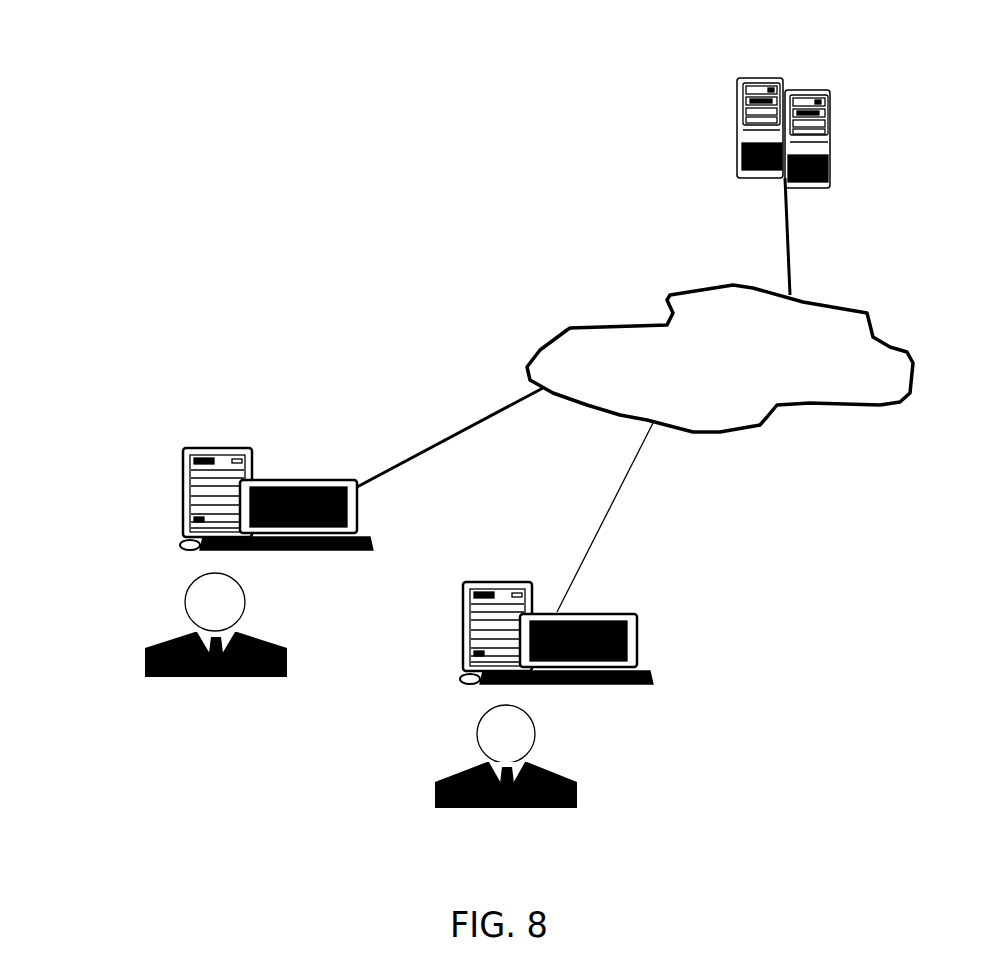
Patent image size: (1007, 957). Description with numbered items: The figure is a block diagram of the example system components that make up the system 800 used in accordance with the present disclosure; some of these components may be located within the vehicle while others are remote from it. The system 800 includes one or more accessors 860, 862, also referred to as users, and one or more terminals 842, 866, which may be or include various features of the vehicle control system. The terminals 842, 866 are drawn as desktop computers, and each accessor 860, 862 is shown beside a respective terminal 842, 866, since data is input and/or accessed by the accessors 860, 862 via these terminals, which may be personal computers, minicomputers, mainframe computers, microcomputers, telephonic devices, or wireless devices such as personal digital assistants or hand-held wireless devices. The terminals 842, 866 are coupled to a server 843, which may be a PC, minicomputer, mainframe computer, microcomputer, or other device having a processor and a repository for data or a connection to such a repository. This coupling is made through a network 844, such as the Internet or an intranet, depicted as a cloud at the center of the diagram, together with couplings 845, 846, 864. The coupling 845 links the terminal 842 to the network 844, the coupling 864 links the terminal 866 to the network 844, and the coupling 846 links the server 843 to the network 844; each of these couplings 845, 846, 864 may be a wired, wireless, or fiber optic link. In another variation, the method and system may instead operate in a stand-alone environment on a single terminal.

The system 800 is at (162, 46).
The terminal 842 is at (187, 448).
The server 843 is at (822, 92).
The network 844 is at (667, 305).
The coupling 845 is at (450, 430).
The coupling 846 is at (783, 232).
The accessor 860 is at (170, 637).
The accessor 862 is at (575, 783).
The coupling 864 is at (612, 503).
The terminal 866 is at (637, 637).